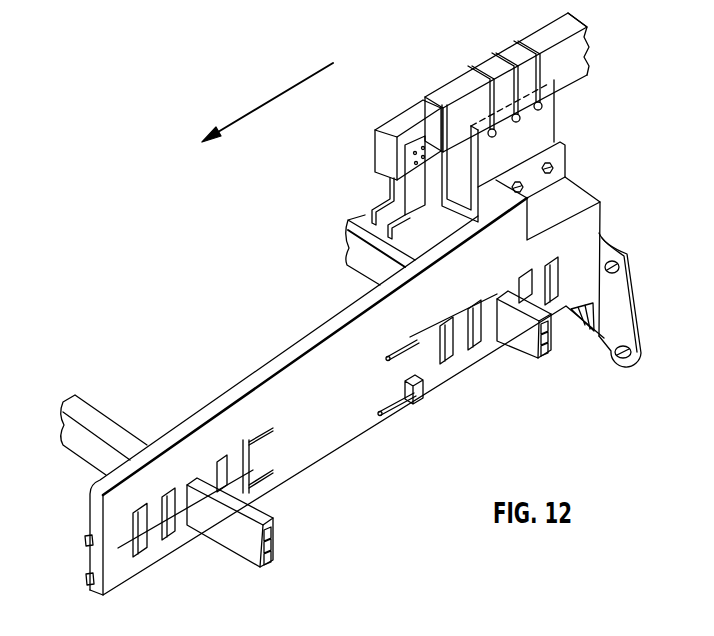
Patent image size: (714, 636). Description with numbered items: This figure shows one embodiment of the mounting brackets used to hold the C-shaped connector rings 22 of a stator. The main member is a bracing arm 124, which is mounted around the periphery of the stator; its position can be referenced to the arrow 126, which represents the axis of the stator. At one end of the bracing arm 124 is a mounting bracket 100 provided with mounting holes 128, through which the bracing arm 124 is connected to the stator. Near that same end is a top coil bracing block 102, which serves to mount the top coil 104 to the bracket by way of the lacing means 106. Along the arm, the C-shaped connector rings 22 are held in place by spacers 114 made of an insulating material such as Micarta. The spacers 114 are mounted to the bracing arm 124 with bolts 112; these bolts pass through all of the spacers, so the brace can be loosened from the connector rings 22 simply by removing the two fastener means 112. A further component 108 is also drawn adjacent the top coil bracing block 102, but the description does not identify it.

The C-shaped connector rings 22 is at (279, 537).
The mounting bracket 100 is at (640, 314).
The top coil bracing block 102 is at (556, 112).
The top coil 104 is at (588, 50).
The lacing means 106 is at (458, 101).
The contact strips 108 is at (470, 168).
The bolts 112 is at (86, 580).
The spacers 114 is at (459, 334).
The bracing arm 124 is at (286, 350).
The direction arrow 126 is at (275, 98).
The mounting holes 128 is at (614, 266).